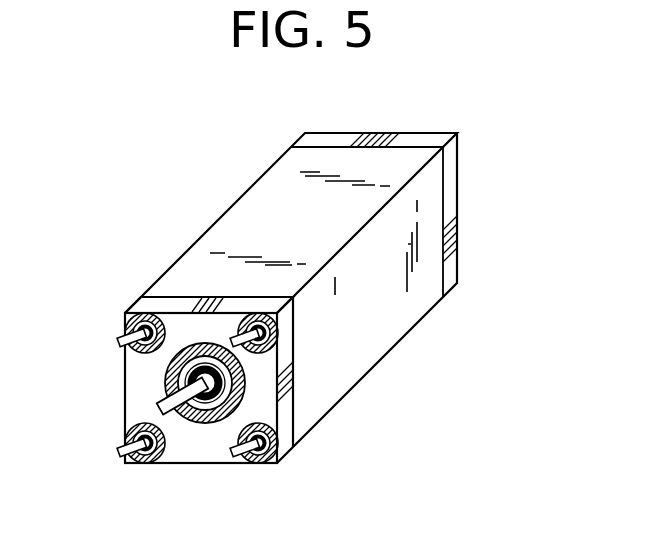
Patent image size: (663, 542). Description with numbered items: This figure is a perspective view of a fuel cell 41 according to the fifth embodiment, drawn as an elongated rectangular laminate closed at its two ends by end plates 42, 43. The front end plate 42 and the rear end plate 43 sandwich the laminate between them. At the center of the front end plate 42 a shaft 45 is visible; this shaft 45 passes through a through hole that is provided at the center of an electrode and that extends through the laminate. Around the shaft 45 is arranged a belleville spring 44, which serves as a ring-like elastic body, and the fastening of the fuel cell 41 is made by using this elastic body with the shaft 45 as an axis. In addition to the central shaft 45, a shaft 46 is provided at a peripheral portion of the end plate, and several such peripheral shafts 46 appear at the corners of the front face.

The fuel cell 41 is at (265, 158).
The end plate 42 is at (180, 303).
The end plate 43 is at (328, 138).
The belleville spring 44 is at (166, 380).
The shaft 45 is at (160, 410).
The shaft at a peripheral portion 46 is at (240, 347).